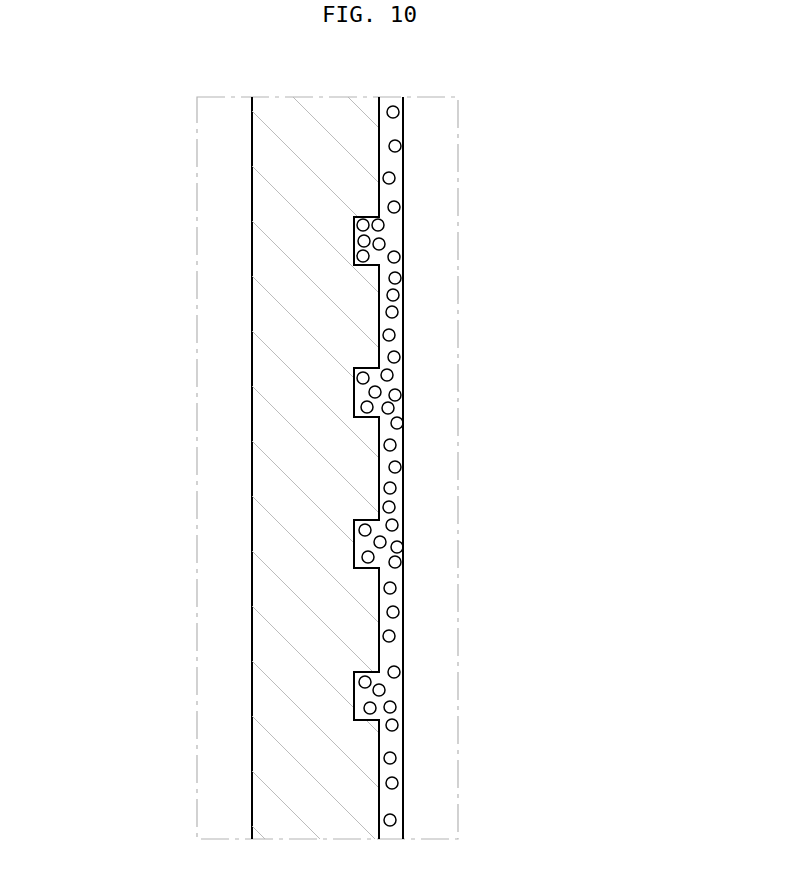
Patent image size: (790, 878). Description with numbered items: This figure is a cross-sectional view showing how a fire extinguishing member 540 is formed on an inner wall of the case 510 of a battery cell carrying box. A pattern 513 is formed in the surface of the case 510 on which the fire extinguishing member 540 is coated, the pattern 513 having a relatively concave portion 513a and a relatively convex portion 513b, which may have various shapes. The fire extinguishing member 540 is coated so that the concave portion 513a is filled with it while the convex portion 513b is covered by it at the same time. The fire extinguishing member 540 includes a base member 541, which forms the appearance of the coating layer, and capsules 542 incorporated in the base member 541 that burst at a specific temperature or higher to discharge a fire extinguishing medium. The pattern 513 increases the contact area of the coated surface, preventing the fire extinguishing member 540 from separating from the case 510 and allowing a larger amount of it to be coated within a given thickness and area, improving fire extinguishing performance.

The case 510 is at (252, 250).
The pattern 513 is at (395, 439).
The concave portion 513a is at (355, 390).
The convex portion 513b is at (379, 463).
The fire extinguishing member 540 is at (501, 468).
The base member 541 is at (395, 190).
The capsules 542 is at (393, 257).